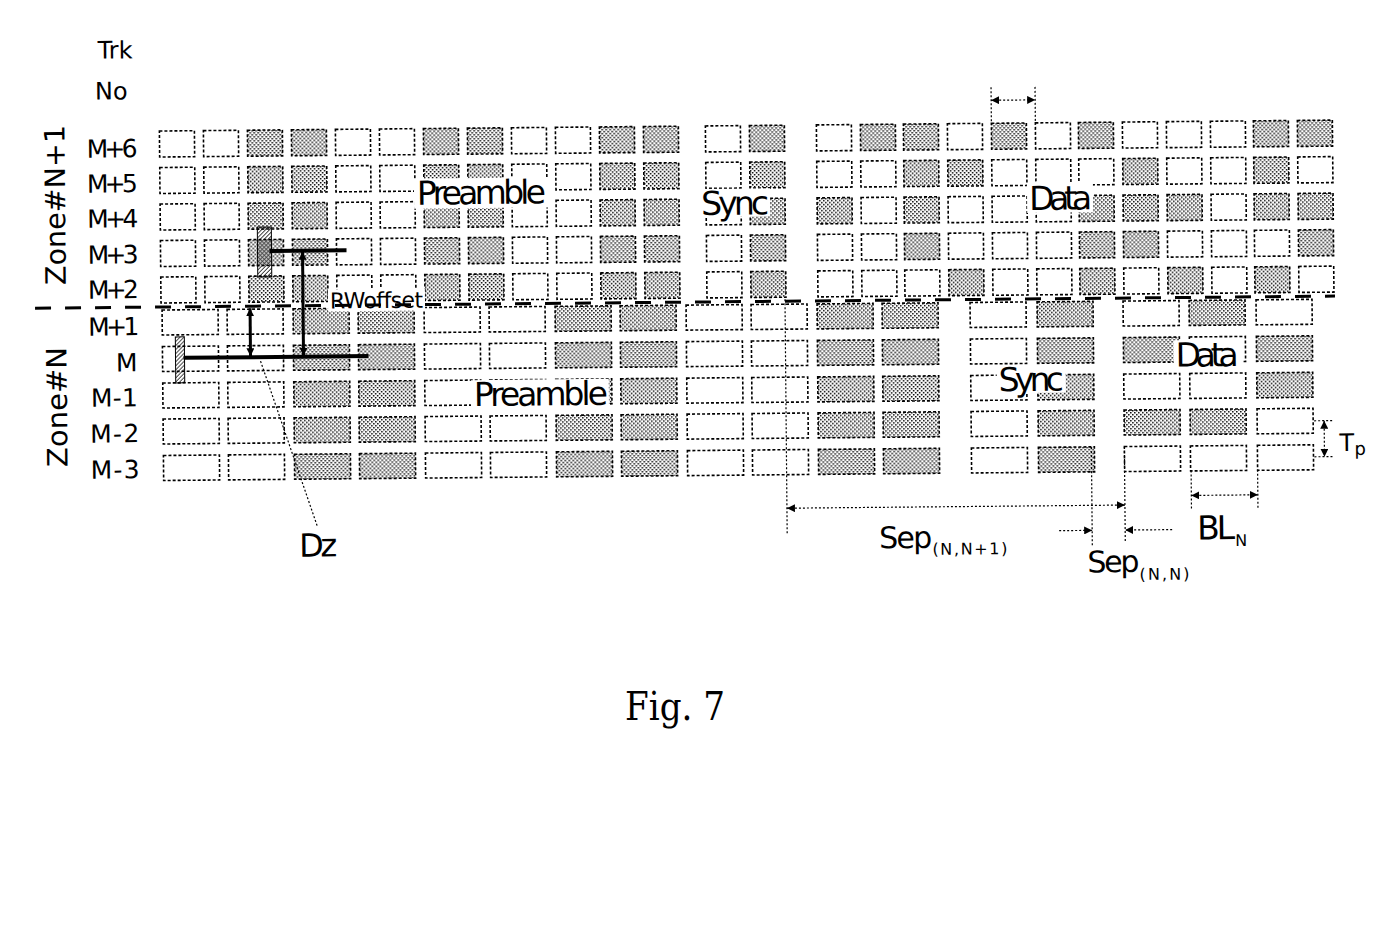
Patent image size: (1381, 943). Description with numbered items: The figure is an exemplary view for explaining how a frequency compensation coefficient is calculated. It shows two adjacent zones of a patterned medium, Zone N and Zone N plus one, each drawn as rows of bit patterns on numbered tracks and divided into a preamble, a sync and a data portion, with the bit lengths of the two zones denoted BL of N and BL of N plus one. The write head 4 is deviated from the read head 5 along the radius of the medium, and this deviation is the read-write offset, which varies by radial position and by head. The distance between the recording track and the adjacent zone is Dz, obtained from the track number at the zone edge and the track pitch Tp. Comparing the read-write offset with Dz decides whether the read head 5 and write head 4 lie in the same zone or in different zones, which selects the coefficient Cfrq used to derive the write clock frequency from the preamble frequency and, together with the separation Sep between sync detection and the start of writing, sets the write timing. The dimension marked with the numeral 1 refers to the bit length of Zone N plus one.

The write head 4 is at (177, 380).
The read head 5 is at (262, 268).
The bit length BL(N+1) of zone N+ 1 is at (1020, 81).